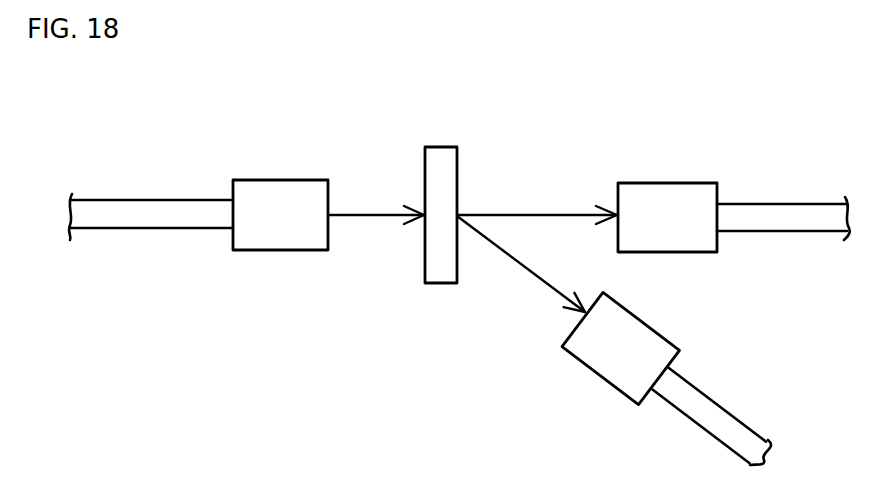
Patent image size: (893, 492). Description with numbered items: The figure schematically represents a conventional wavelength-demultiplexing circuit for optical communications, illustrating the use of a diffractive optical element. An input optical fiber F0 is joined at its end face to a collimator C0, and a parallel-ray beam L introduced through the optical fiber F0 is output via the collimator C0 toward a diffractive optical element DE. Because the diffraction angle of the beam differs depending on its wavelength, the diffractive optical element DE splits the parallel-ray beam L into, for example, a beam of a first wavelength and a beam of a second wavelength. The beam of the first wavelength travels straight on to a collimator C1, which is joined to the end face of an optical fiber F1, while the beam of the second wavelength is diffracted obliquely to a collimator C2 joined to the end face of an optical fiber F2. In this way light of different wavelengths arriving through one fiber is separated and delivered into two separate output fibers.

The optical fiber F0 is at (141, 195).
The collimator C0 is at (279, 172).
The parallel-ray beam L is at (368, 205).
The diffractive optical element DE is at (443, 146).
The collimator C1 is at (677, 178).
The optical fiber F1 is at (801, 198).
The collimator C2 is at (643, 313).
The optical fiber F2 is at (716, 390).